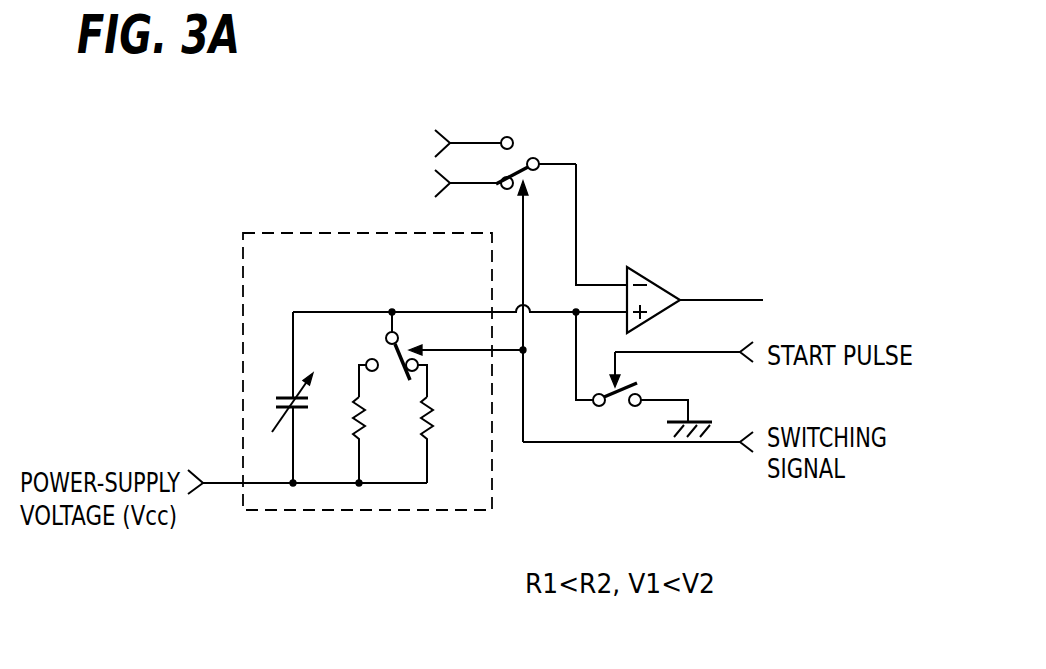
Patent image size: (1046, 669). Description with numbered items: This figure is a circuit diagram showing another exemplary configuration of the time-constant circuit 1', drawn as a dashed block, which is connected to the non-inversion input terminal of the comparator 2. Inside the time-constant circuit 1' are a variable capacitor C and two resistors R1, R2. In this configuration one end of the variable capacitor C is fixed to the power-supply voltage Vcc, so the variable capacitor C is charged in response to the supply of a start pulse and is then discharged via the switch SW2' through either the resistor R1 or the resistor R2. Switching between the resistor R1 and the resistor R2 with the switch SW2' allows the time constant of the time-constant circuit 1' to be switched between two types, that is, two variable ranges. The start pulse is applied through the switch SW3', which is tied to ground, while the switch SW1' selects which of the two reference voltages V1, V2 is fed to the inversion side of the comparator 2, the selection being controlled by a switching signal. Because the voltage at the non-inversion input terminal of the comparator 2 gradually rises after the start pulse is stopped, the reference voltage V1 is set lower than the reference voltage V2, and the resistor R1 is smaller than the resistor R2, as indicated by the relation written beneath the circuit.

The time-constant circuit 1' is at (367, 324).
The comparator 2 is at (660, 283).
The switch SW1' is at (536, 144).
The switch SW2' is at (412, 354).
The switch SW3' is at (675, 407).
The variable capacitor C is at (290, 397).
The resistor R1 is at (445, 440).
The resistor R2 is at (376, 440).
The reference voltage V1 is at (449, 184).
The reference voltage V2 is at (449, 144).